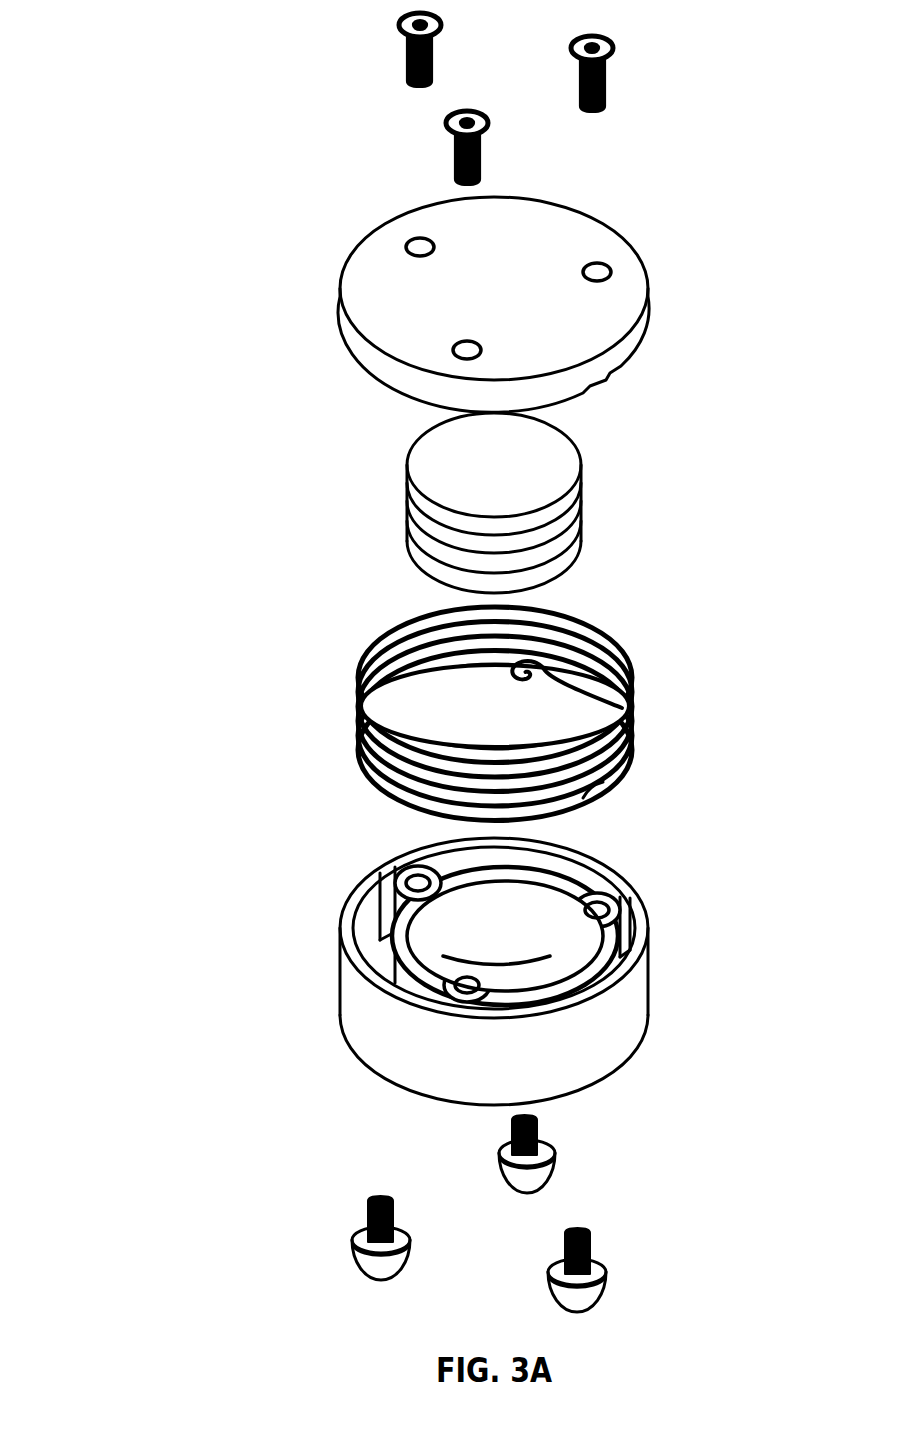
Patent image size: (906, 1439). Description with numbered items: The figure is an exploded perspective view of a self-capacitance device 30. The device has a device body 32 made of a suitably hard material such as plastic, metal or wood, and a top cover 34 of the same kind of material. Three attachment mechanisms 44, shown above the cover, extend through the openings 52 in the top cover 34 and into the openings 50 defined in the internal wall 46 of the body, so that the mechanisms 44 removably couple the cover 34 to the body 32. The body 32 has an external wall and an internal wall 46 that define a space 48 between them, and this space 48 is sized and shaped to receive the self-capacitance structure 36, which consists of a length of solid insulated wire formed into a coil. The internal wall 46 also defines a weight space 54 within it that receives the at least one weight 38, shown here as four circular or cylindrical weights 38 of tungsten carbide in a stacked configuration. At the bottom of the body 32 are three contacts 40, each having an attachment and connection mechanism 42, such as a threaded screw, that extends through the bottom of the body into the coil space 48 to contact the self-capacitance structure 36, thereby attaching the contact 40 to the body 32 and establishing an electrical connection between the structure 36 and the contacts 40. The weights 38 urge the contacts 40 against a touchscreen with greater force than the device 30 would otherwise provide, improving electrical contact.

The self-capacitance device 30 is at (93, 78).
The device body 32 is at (386, 1030).
The top cover 34 is at (608, 305).
The self-capacitance structure 36 is at (641, 710).
The weight 38 is at (540, 462).
The contact 40 is at (517, 1180).
The attachment and connection mechanism 42 is at (600, 1242).
The attachment mechanism 44 is at (446, 52).
The internal wall 46 is at (603, 927).
The space 48 is at (370, 937).
The opening 50 is at (597, 906).
The opening 52 is at (596, 269).
The weight space 54 is at (498, 928).